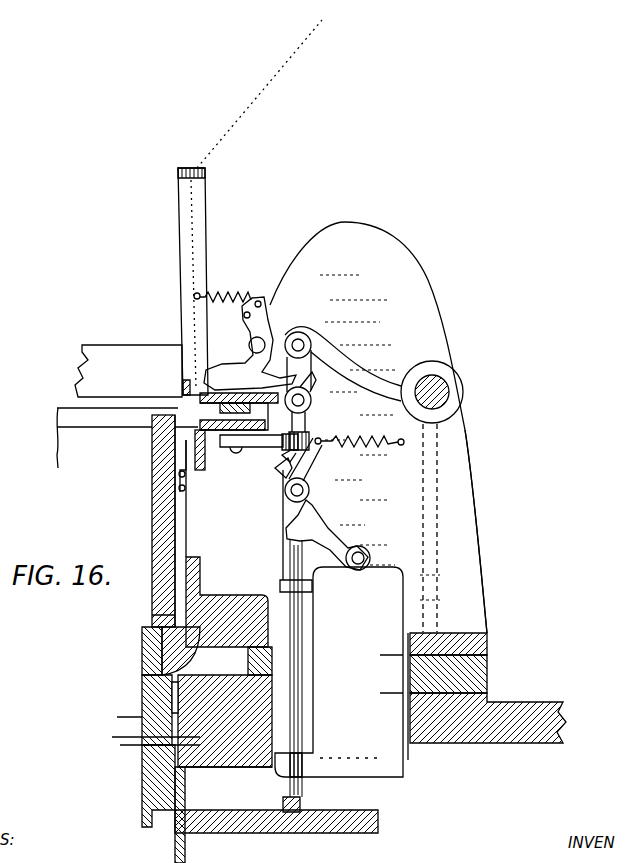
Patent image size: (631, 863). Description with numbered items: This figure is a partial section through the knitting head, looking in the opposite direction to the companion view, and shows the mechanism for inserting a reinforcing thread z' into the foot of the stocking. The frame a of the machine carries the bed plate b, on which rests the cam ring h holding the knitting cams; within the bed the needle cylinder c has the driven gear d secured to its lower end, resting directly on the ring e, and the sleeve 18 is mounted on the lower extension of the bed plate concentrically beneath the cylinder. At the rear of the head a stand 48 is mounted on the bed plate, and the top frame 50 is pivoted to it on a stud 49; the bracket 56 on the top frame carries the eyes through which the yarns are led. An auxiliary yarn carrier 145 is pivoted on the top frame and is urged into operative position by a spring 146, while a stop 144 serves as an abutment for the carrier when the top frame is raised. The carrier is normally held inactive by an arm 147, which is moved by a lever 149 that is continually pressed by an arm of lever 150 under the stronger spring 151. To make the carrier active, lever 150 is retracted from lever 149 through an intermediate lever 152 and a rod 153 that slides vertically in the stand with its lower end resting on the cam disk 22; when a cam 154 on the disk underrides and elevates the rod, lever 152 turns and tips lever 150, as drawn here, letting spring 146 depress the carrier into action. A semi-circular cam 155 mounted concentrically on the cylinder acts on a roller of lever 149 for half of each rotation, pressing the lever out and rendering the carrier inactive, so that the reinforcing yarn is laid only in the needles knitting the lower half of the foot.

The bracket 56 is at (183, 240).
The reinforcing thread z' is at (259, 94).
The auxiliary yarn carrier 145 is at (192, 375).
The spring 146 is at (234, 295).
The stop 144 is at (188, 383).
The arm 147 is at (268, 368).
The lever 149 is at (310, 388).
The top frame 50 is at (423, 276).
The stud 49 is at (440, 392).
The stand 48 is at (483, 552).
The spring 151 is at (372, 440).
The semi-circular cam 155 is at (256, 452).
The lever 150 is at (292, 474).
The intermediate lever 152 is at (300, 530).
The rod 153 is at (322, 632).
The cam 154 is at (302, 805).
The cam disk 22 is at (385, 822).
The sleeve 18 is at (187, 855).
The needle cylinder c is at (188, 532).
The cam ring h is at (230, 600).
The driven gear d is at (185, 672).
The ring e is at (130, 745).
The bed plate b is at (487, 668).
The frame a is at (566, 723).